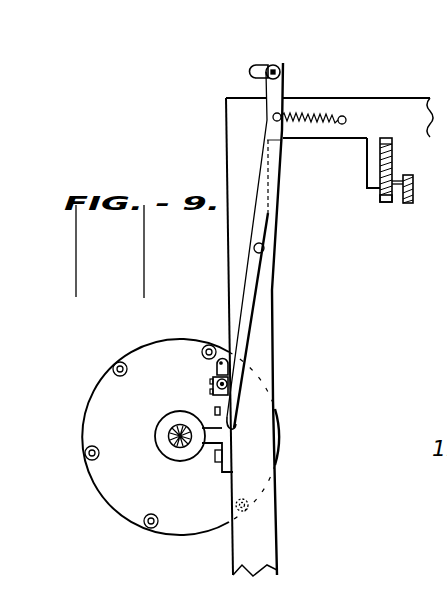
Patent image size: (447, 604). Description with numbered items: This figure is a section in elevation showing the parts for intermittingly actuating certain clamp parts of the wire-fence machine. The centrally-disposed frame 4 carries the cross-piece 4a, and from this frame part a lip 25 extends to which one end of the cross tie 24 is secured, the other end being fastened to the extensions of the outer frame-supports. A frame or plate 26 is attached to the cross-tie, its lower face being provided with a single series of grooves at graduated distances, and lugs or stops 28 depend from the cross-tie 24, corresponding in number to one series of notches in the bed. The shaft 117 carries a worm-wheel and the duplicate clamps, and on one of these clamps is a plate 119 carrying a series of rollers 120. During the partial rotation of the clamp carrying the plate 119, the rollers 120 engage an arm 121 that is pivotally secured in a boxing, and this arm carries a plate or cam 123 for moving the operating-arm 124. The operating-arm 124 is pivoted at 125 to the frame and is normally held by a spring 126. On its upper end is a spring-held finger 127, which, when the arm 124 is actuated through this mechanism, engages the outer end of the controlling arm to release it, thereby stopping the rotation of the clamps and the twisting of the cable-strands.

The frame 4 is at (233, 243).
The cross-piece 4a is at (422, 79).
The cross tie 24 is at (390, 157).
The lip 25 is at (365, 153).
The frame plate 26 is at (413, 192).
The lugs 28 is at (386, 202).
The shaft 117 is at (172, 442).
The plate 119 is at (180, 437).
The rollers 120 is at (204, 349).
The arm 121 is at (217, 366).
The cam 123 is at (227, 387).
The operating-arm 124 is at (248, 316).
The pivot 125 is at (266, 248).
The spring 126 is at (323, 113).
The spring-held finger 127 is at (270, 54).